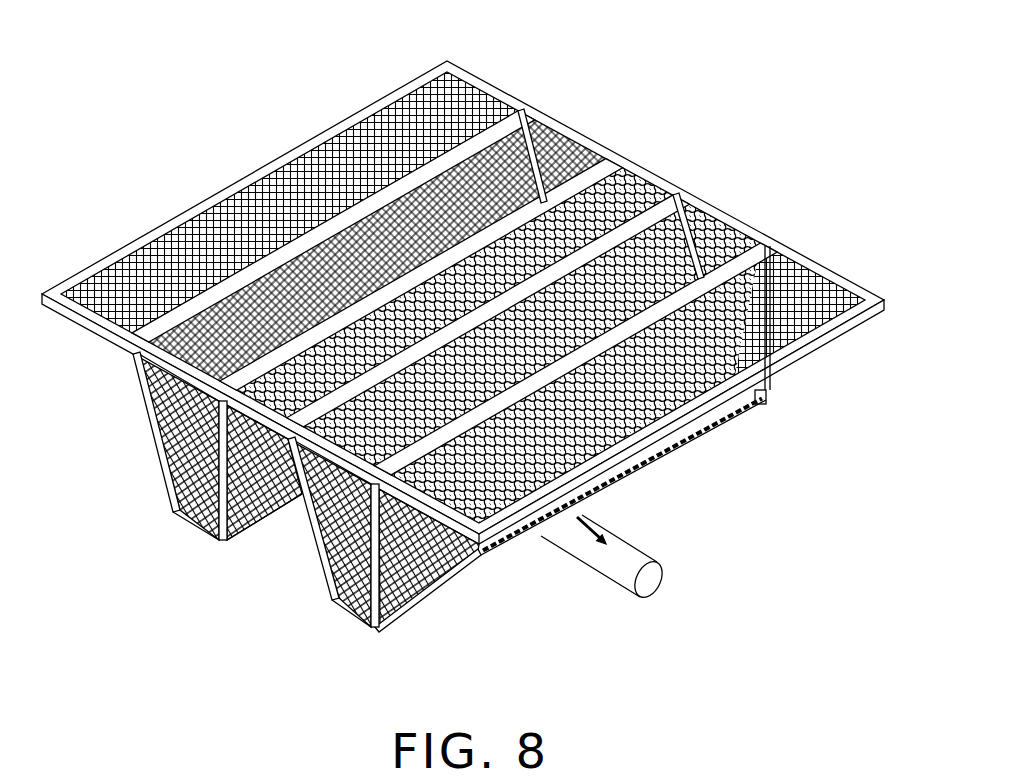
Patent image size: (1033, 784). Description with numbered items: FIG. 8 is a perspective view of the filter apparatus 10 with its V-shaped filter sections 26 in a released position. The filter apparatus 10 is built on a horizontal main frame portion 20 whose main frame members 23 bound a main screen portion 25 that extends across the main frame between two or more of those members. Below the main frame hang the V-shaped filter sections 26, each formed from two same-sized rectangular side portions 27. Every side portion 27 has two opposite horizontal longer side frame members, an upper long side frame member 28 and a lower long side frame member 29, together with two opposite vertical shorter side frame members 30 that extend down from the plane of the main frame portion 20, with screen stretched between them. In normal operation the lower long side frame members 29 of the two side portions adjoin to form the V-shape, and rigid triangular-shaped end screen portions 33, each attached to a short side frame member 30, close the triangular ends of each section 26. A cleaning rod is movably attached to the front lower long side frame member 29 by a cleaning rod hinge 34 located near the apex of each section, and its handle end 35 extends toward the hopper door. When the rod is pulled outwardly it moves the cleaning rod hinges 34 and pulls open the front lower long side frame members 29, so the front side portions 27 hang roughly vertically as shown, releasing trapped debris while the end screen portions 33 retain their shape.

The filter apparatus 10 is at (733, 92).
The main frame portion 20 is at (463, 273).
The main frame members 23 is at (307, 143).
The main screen portion 25 is at (395, 102).
The V-shaped filter section 26 is at (167, 572).
The side portion 27 is at (137, 420).
The upper long side frame member 28 is at (193, 227).
The lower long side frame member 29 is at (723, 430).
The shorter side frame member 30 is at (182, 518).
The triangular-shaped end screen portion 33 is at (157, 463).
The cleaning rod hinge 34 is at (600, 520).
The handle end 35 is at (580, 562).